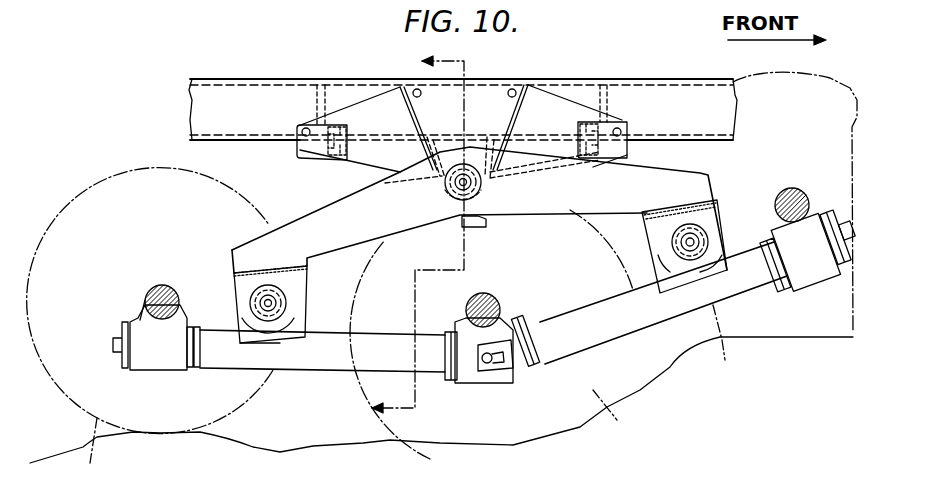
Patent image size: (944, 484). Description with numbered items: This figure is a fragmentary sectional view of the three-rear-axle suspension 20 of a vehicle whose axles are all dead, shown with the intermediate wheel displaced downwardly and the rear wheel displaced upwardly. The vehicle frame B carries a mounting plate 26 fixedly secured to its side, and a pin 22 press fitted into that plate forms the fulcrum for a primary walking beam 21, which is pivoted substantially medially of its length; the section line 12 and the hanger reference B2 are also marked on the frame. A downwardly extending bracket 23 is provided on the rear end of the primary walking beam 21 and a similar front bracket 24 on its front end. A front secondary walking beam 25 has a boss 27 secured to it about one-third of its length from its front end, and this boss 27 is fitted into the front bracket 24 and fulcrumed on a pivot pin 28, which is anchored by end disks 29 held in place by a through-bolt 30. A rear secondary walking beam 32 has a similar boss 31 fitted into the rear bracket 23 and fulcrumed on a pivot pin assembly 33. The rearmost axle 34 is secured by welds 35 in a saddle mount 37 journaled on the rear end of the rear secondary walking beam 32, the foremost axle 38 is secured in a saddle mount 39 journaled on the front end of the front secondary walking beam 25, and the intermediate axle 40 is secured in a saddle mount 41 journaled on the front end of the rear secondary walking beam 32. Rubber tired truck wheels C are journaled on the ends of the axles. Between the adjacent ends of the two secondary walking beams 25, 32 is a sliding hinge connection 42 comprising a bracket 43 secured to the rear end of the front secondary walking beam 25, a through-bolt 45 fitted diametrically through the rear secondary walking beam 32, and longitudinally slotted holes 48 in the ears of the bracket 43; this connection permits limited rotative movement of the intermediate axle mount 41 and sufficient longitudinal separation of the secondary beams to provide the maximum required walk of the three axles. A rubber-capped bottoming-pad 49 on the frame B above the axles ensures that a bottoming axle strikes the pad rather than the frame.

The vehicle frame B is at (634, 74).
The frame hanger bolt B2 is at (265, 78).
The section line 12 is at (401, 233).
The three-rear-axle suspension 20 is at (165, 152).
The primary walking beam 21 is at (693, 178).
The pin 22 is at (445, 190).
The bracket 23 is at (232, 283).
The front bracket 24 is at (708, 214).
The front secondary walking beam 25 is at (623, 322).
The mounting plate 26 is at (540, 107).
The boss 27 is at (660, 272).
The pivot pin 28 is at (724, 272).
The end disks 29 is at (690, 258).
The through-bolt 30 is at (689, 236).
The boss 31 is at (292, 372).
The rear secondary walking beam 32 is at (368, 345).
The pivot pin assembly 33 is at (282, 297).
The rearmost axle 34 is at (152, 290).
The welds 35 is at (146, 291).
The saddle mount 37 is at (138, 318).
The foremost axle 38 is at (797, 194).
The saddle mount 39 is at (810, 278).
The intermediate axle 40 is at (495, 305).
The saddle mount 41 is at (458, 326).
The sliding hinge connection 42 is at (478, 371).
The bracket 43 is at (543, 368).
The through-bolt 45 is at (493, 364).
The longitudinally slotted holes 48 is at (500, 362).
The bottoming-pad 49 is at (482, 222).
The truck wheels C is at (443, 278).